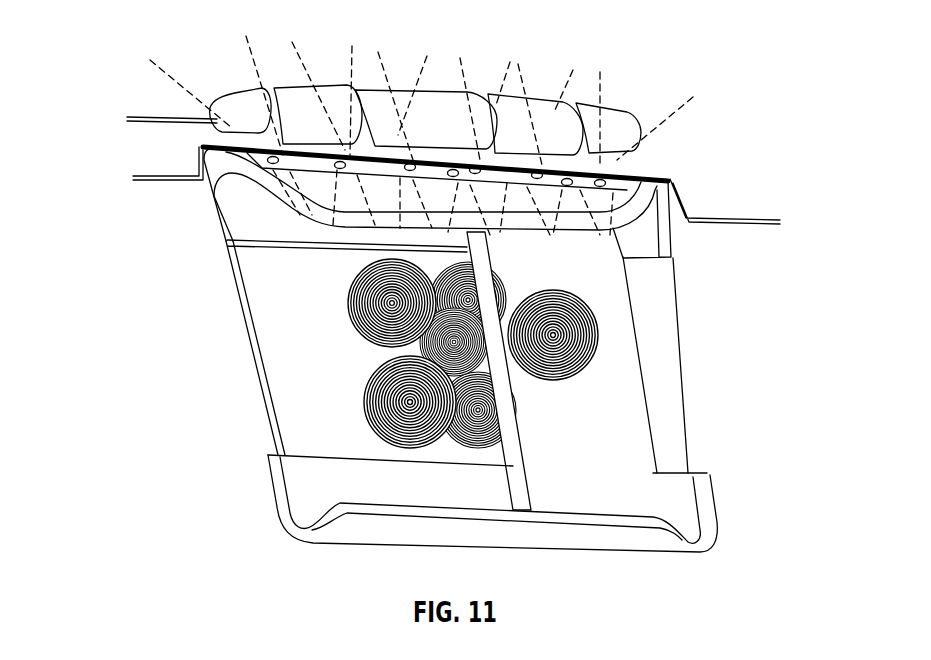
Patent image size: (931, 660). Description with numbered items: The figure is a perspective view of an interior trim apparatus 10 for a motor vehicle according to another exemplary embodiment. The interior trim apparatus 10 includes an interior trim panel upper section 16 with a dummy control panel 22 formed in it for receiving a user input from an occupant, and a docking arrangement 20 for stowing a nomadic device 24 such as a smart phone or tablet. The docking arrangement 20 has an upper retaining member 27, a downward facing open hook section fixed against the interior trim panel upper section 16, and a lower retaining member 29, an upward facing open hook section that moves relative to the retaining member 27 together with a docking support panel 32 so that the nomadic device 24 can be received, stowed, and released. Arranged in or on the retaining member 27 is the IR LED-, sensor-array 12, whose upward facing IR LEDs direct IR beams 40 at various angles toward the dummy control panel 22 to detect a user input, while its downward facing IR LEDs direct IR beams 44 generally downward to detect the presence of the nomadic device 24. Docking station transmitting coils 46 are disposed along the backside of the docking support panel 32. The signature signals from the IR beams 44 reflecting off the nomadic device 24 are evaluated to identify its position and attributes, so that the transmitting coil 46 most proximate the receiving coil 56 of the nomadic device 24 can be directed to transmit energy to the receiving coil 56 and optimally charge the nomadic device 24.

The interior trim apparatus 10 is at (708, 66).
The IR LED-, sensor-array 12 is at (632, 176).
The interior trim panel upper section 16 is at (733, 225).
The docking arrangement 20 is at (650, 335).
The dummy control panel 22 is at (613, 110).
The nomadic device 24 is at (630, 448).
The retaining member 27 is at (210, 191).
The retaining member 29 is at (278, 488).
The docking support panel 32 is at (247, 284).
The IR beams 40 is at (250, 57).
The IR beams 44 is at (625, 228).
The docking station transmitting coils 46 is at (373, 381).
The receiving coil 56 is at (570, 377).